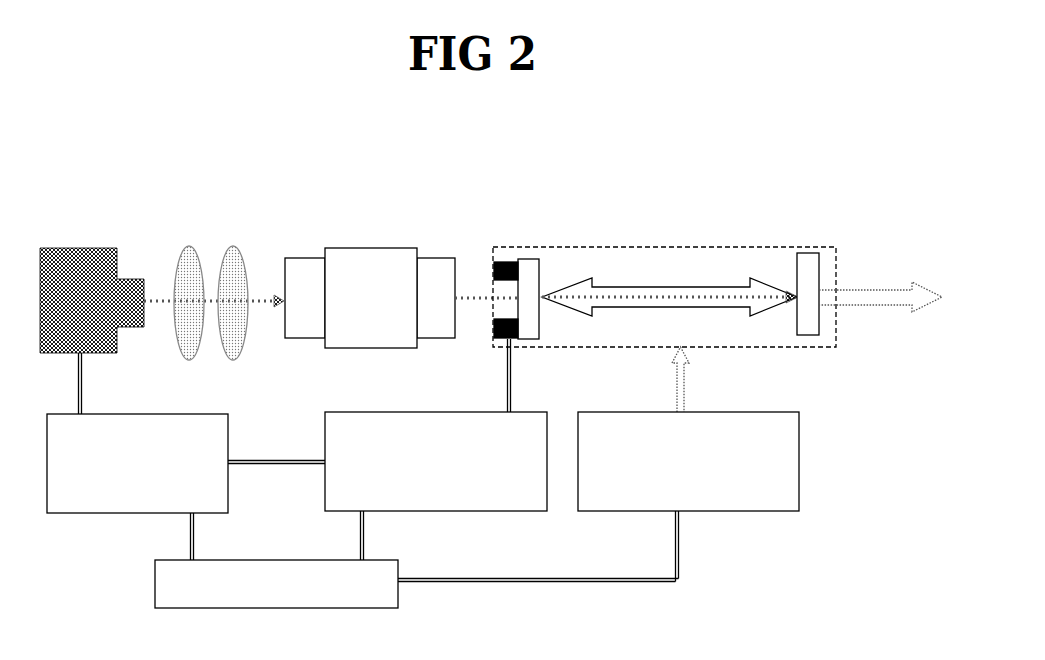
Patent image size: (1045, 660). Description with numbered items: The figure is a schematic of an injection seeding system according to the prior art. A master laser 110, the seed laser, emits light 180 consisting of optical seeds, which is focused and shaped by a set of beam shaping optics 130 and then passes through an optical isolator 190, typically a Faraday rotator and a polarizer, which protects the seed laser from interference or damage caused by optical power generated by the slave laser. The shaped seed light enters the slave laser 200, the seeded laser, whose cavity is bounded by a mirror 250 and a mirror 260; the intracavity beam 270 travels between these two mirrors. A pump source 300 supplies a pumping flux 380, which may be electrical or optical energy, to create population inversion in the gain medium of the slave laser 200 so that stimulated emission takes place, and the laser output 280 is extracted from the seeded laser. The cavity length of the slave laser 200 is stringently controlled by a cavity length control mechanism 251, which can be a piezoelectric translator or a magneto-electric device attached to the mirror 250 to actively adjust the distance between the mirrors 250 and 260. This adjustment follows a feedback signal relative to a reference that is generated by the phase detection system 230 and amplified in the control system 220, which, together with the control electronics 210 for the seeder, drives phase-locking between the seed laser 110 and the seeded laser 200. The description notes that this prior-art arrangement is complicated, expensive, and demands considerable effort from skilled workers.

The master laser 110 is at (92, 300).
The beam shaping optics 130 is at (211, 290).
The light 180 is at (479, 285).
The optical isolator 190 is at (370, 298).
The slave laser 200 is at (669, 284).
The control electronics for the seeder 210 is at (137, 463).
The control system 220 is at (436, 461).
The phase detection system 230 is at (276, 584).
The mirror 250 is at (527, 285).
The cavity length control mechanism 251 is at (486, 337).
The mirror 260 is at (805, 279).
The intracavity beam 270 is at (670, 316).
The laser output 280 is at (880, 278).
The pump source 300 is at (688, 461).
The pumping flux 380 is at (708, 379).